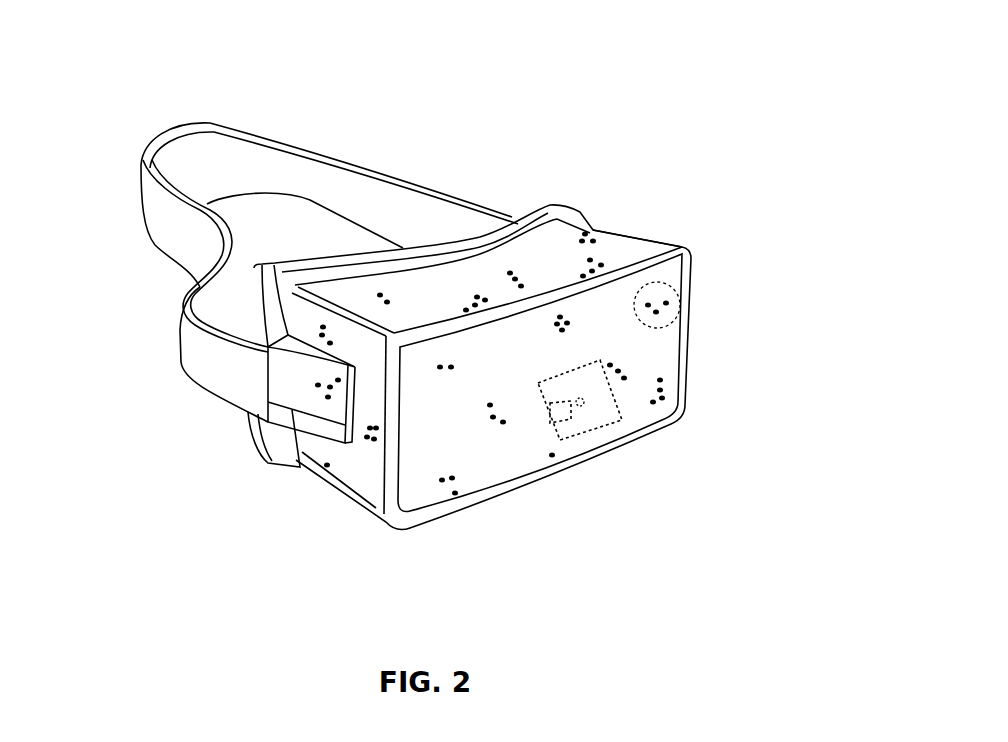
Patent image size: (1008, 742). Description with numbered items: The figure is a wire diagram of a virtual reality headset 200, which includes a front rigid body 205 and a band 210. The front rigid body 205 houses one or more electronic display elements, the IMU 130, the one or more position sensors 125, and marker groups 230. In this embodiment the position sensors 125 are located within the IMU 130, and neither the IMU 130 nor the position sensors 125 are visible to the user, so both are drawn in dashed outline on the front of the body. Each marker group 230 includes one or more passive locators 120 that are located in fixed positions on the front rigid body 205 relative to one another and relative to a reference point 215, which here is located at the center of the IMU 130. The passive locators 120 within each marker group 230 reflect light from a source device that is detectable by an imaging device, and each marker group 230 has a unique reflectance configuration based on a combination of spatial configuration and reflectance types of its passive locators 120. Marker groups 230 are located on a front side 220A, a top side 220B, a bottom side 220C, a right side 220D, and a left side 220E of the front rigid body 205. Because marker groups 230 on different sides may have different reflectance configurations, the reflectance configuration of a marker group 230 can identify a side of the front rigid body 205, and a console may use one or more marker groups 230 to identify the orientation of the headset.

The VR headset 200 is at (32, 61).
The band 210 is at (420, 178).
The front rigid body 205 is at (463, 383).
The front side 220A is at (429, 507).
The top side 220B is at (347, 294).
The bottom side 220C is at (322, 508).
The right side 220D is at (358, 475).
The left side 220E is at (637, 188).
The passive locator 120 is at (677, 302).
The marker group 230 is at (681, 335).
The IMU 130 is at (636, 432).
The position sensors 125 is at (553, 435).
The reference point 215 is at (585, 420).